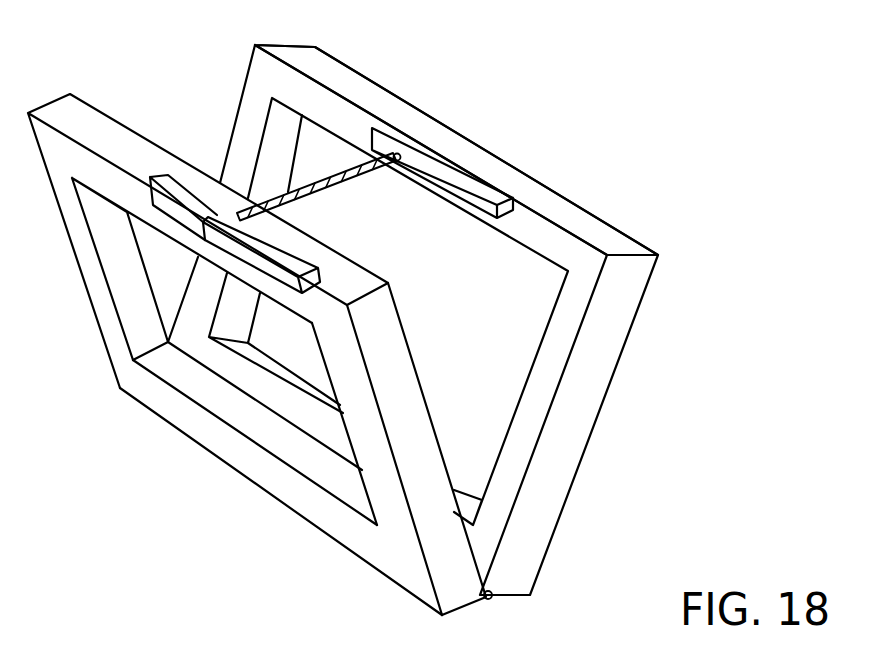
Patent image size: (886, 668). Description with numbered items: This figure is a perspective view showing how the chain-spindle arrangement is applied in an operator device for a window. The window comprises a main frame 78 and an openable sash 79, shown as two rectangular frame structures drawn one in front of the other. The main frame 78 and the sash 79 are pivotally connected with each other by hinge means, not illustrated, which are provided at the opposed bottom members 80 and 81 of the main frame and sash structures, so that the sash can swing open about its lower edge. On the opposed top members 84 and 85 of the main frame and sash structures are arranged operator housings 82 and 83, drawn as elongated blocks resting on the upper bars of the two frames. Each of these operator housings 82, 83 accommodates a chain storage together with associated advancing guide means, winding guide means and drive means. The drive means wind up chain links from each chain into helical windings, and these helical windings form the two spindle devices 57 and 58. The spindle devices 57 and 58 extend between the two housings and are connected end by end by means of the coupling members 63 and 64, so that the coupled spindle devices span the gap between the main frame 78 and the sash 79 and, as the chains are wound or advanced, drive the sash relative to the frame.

The spindle device 57 is at (392, 168).
The spindle device 58 is at (290, 182).
The coupling member 63 is at (332, 186).
The coupling member 64 is at (370, 137).
The main frame 78 is at (558, 447).
The openable sash 79 is at (443, 540).
The bottom member 80 is at (277, 375).
The bottom member 81 is at (285, 490).
The operator housing 82 is at (460, 172).
The operator housing 83 is at (292, 262).
The top member 84 is at (328, 70).
The top member 85 is at (55, 110).